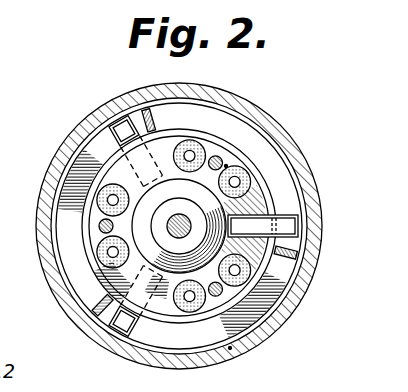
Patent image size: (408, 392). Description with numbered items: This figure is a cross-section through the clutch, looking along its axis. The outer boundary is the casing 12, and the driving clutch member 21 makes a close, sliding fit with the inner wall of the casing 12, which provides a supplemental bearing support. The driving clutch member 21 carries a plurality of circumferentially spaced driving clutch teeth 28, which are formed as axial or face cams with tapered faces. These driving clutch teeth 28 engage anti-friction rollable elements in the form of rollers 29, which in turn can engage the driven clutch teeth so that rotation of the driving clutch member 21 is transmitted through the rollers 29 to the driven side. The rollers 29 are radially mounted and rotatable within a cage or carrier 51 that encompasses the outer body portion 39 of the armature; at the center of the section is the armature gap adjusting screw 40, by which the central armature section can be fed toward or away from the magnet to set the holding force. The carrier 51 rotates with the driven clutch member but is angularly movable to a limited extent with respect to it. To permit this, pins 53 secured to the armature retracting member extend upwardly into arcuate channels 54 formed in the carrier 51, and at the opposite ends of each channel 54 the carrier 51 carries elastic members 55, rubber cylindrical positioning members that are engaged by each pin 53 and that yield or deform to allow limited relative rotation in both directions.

The casing 12 is at (120, 349).
The driving clutch member 21 is at (70, 161).
The driving clutch teeth 28 is at (145, 110).
The rollers 29 is at (118, 120).
The outer body portion of the armature 39 is at (266, 198).
The armature gap adjusting screw 40 is at (185, 216).
The carrier 51 is at (168, 138).
The pins 53 is at (222, 158).
The arcuate channels 54 is at (226, 166).
The elastic members 55 is at (204, 142).